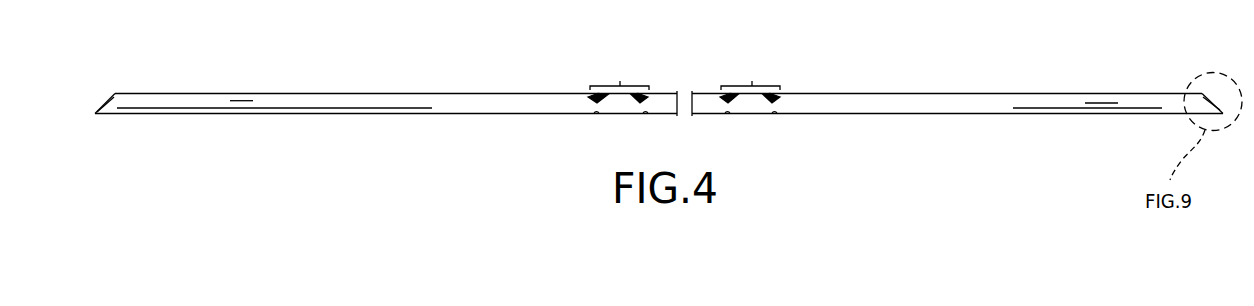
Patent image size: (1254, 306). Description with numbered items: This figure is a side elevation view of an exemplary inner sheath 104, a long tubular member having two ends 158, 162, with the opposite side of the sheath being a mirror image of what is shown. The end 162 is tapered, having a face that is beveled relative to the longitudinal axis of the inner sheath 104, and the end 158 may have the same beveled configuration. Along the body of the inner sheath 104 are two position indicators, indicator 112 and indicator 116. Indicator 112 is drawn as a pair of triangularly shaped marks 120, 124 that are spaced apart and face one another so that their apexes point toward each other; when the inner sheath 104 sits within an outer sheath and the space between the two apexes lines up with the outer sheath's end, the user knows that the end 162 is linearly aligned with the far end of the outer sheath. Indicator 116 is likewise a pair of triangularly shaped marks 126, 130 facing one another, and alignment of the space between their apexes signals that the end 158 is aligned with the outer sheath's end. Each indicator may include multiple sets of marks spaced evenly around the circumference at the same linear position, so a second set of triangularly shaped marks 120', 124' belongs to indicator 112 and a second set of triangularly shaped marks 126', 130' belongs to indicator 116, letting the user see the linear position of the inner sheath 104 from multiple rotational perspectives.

The inner sheath 104 is at (973, 105).
The indicator 112 is at (619, 72).
The indicator 116 is at (750, 72).
The triangularly shaped mark 120 is at (572, 69).
The triangularly shaped mark 120' is at (570, 136).
The triangularly shaped mark 124 is at (665, 128).
The triangularly shaped mark 124' is at (624, 136).
The triangularly shaped mark 126 is at (704, 65).
The triangularly shaped mark 126' is at (752, 139).
The triangularly shaped mark 130 is at (808, 74).
The triangularly shaped mark 130' is at (804, 137).
The end 158 is at (106, 100).
The end 162 is at (1225, 72).